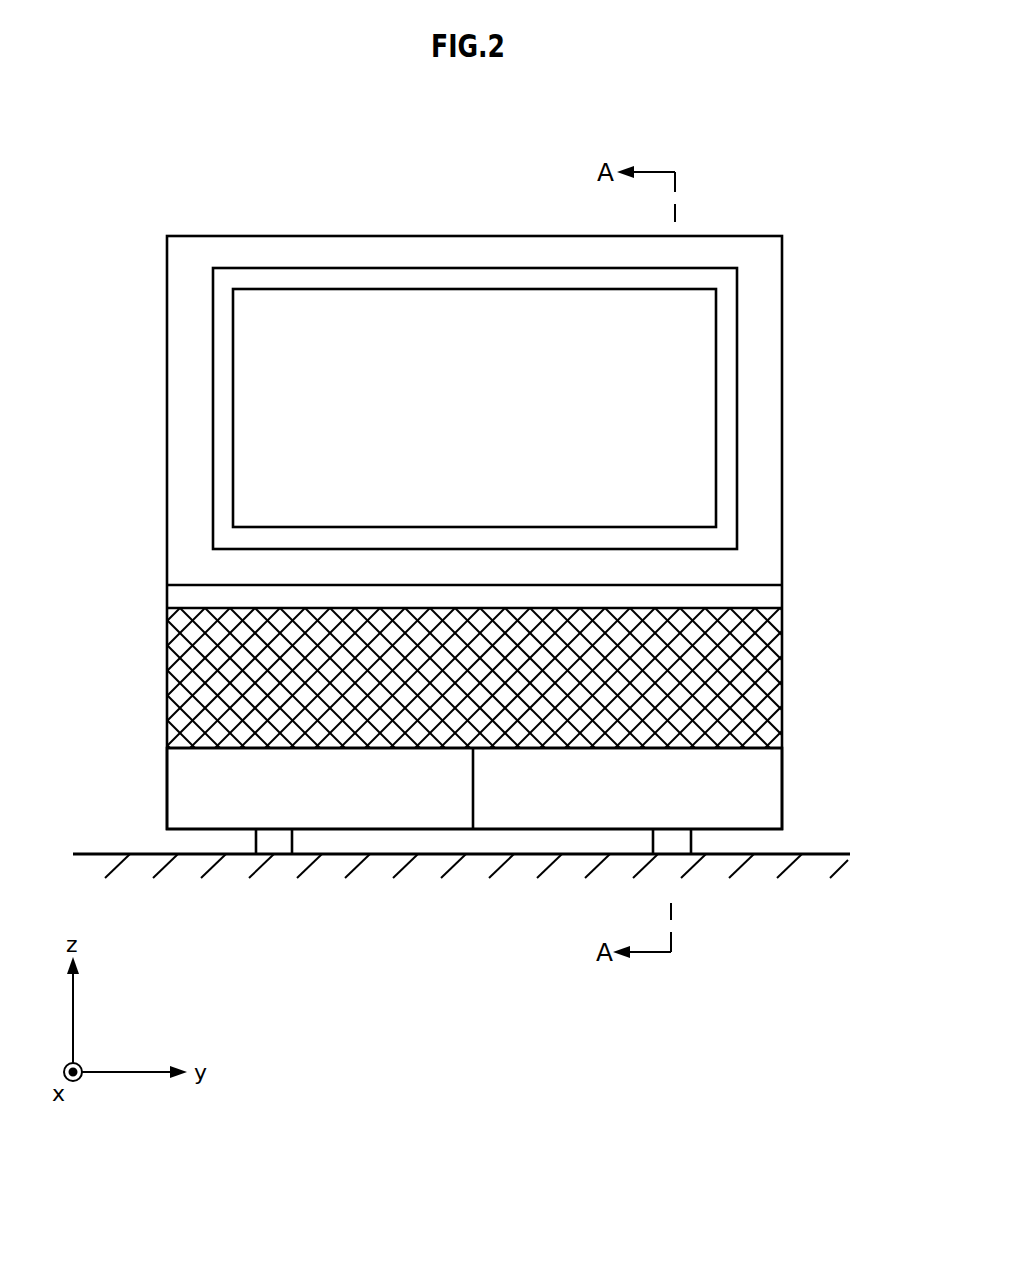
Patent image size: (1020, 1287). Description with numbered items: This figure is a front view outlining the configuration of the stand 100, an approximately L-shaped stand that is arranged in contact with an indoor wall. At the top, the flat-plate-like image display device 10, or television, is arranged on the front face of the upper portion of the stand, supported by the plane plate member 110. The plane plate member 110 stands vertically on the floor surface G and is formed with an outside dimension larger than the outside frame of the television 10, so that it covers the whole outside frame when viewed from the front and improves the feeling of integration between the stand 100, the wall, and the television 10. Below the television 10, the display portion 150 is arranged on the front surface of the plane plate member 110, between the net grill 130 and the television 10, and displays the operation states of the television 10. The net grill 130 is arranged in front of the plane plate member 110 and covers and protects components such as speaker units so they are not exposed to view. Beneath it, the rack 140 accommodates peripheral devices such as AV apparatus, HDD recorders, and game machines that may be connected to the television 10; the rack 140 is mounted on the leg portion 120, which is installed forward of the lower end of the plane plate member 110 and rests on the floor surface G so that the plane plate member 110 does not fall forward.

The stand 100 is at (470, 195).
The image display device 10 is at (305, 273).
The plane plate member 110 is at (772, 358).
The display portion 150 is at (772, 597).
The net grill 130 is at (772, 672).
The rack 140 is at (772, 790).
The leg portion 120 is at (272, 847).
The floor surface G is at (112, 853).